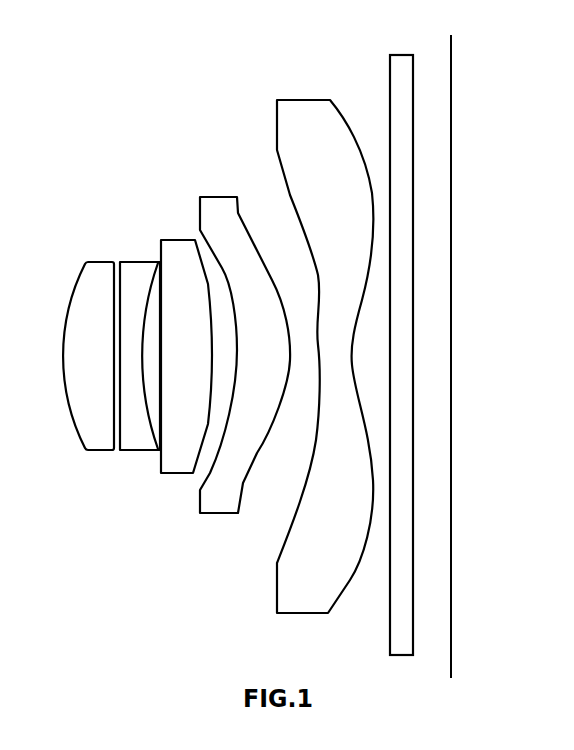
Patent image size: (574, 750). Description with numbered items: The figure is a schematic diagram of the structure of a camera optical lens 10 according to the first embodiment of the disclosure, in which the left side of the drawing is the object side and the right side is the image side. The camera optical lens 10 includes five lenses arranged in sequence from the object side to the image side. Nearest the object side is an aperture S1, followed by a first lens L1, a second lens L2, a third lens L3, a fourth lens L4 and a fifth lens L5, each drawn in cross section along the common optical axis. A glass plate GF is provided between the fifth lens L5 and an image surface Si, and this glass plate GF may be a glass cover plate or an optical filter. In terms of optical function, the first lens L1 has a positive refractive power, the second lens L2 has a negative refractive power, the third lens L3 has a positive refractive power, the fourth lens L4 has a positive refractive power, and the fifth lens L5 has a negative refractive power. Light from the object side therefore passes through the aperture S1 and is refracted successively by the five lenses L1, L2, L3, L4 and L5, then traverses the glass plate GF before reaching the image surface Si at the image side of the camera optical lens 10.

The camera optical lens 10 is at (298, 27).
The aperture S1 is at (68, 460).
The first lens L1 is at (88, 344).
The second lens L2 is at (140, 344).
The third lens L3 is at (186, 344).
The fourth lens L4 is at (245, 343).
The fifth lens L5 is at (325, 343).
The glass plate GF is at (401, 343).
The image surface Si is at (448, 345).